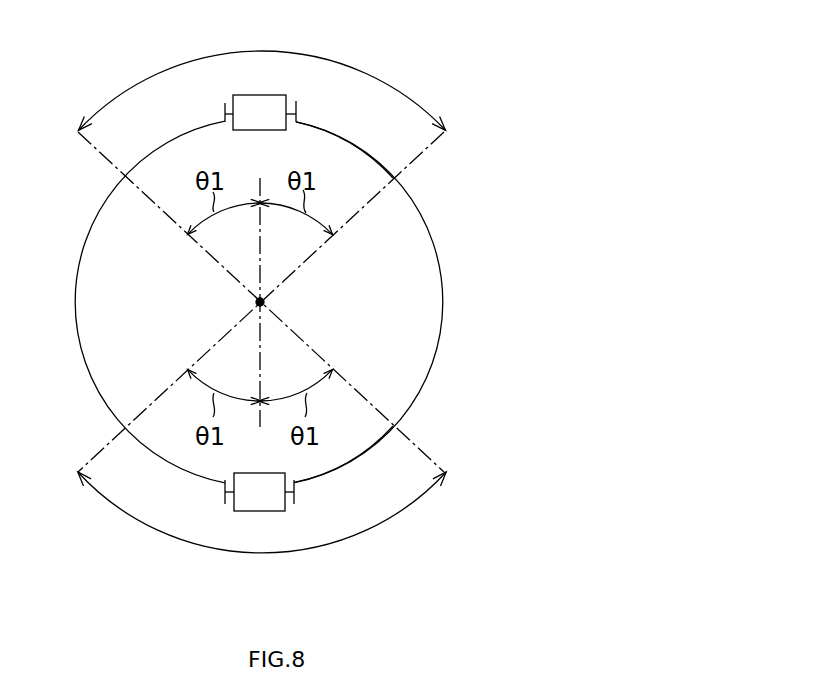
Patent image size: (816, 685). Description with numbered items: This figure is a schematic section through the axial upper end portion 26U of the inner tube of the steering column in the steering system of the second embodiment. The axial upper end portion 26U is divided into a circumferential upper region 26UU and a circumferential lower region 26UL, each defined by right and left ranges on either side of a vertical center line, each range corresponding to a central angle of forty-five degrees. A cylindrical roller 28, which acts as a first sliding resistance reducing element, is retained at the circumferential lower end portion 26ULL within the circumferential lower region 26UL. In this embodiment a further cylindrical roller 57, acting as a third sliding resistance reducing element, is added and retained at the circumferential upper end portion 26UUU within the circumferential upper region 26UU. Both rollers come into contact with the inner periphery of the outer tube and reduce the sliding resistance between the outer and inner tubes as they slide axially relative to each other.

The axial upper end portion 26U is at (418, 203).
The circumferential upper region 26UU is at (168, 70).
The circumferential upper end portion 26UUU is at (301, 126).
The circumferential lower region 26UL is at (200, 545).
The circumferential lower end portion 26ULL is at (298, 482).
The cylindrical roller 57 is at (263, 112).
The cylindrical roller 28 is at (263, 502).